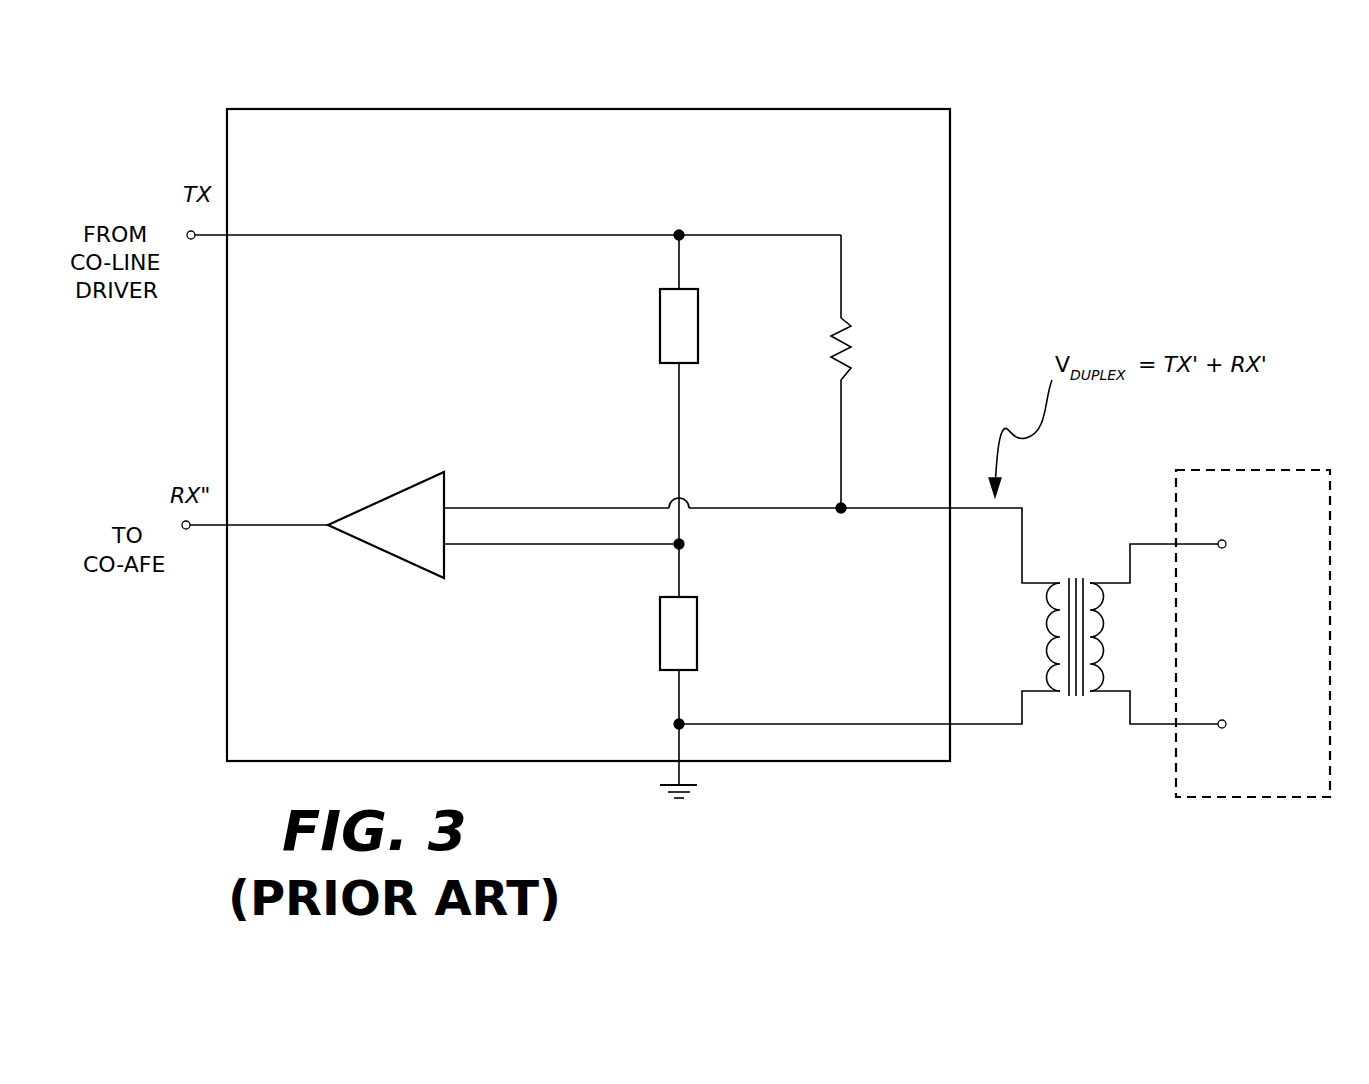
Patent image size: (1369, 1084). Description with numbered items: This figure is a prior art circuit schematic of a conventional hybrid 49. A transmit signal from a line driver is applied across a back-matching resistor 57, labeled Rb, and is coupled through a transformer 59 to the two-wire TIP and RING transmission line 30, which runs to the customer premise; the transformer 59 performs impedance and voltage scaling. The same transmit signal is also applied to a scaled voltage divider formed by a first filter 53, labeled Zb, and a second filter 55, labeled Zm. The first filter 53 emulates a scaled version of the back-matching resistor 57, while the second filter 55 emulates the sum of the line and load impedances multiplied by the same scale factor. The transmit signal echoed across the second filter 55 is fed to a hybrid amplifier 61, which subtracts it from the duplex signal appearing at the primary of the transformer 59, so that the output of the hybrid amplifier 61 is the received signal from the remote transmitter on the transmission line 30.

The hybrid 49 is at (856, 109).
The first filter 53 is at (688, 289).
The second filter 55 is at (660, 630).
The back-matching resistor 57 is at (851, 345).
The transformer 59 is at (1055, 660).
The hybrid amplifier 61 is at (400, 488).
The transmission line 30 is at (1222, 470).